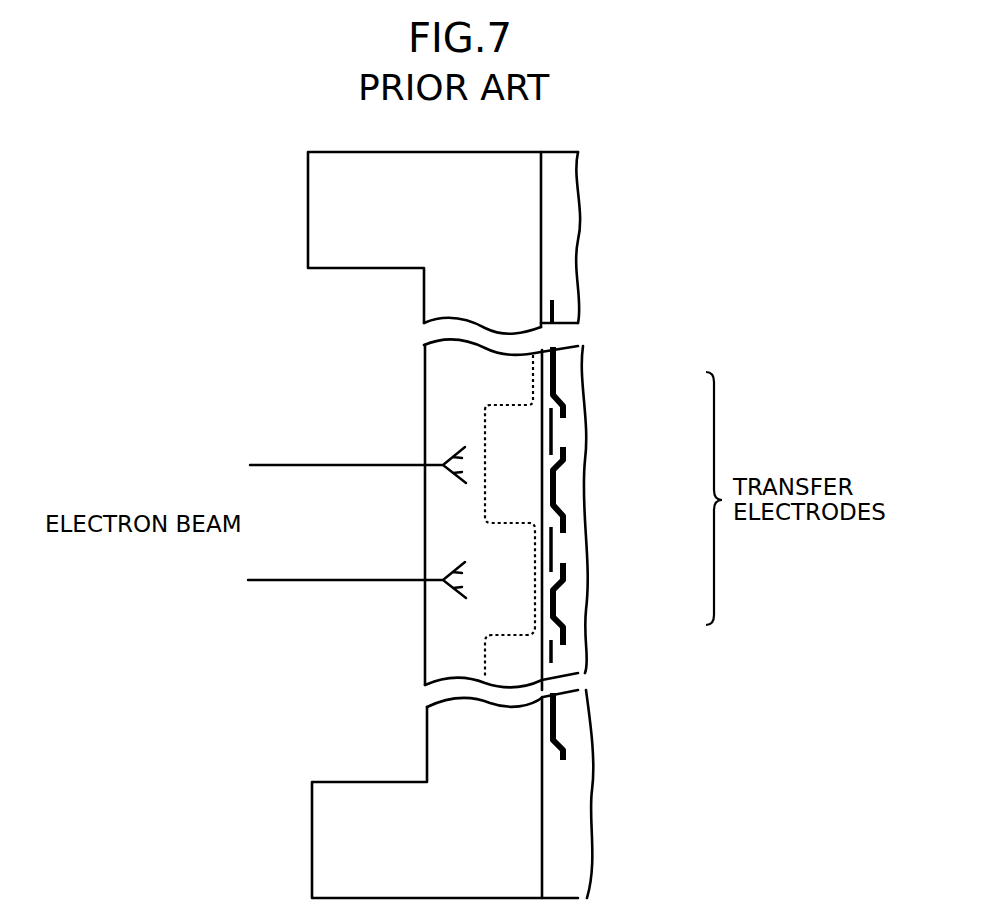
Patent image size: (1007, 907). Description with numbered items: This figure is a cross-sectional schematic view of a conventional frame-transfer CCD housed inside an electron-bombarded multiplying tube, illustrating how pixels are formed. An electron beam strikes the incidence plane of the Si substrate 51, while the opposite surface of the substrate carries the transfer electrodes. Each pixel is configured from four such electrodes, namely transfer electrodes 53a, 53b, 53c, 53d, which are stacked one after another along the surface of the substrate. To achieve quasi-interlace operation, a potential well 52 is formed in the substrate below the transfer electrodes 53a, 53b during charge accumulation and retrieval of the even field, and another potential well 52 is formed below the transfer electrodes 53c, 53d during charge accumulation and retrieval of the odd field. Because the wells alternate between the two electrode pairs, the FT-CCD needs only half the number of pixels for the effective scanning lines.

The Si substrate 51 is at (437, 668).
The potential well 52 is at (505, 402).
The transfer electrode 53a is at (558, 421).
The transfer electrode 53b is at (553, 485).
The transfer electrode 53c is at (553, 547).
The transfer electrode 53d is at (553, 607).